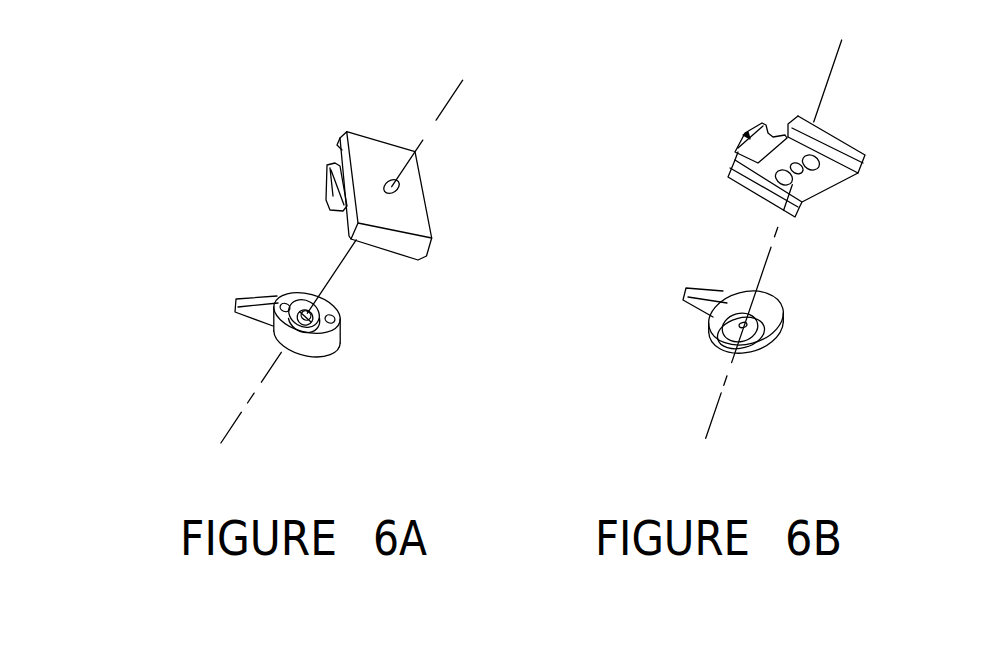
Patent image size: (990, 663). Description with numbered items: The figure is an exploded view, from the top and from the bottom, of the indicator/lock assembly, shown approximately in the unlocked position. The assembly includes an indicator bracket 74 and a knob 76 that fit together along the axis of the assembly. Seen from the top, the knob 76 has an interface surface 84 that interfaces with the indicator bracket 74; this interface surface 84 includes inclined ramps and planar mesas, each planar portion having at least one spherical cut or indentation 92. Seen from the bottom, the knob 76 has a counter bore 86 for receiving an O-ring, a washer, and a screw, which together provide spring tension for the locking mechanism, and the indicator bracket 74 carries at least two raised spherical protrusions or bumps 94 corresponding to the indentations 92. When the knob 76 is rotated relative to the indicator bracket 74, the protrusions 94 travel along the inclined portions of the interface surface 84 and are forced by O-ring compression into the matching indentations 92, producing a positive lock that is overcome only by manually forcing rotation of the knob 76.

In FIG. 6A, the indicator bracket 74 is at (385, 137).
In FIG. 6A, the knob 76 is at (235, 295).
In FIG. 6A, the interface surface 84 is at (297, 292).
In FIG. 6A, the spherical cut or indentation 92 is at (278, 298).
In FIG. 6B, the raised spherical protrusion 94 is at (800, 188).
In FIG. 6B, the counter bore 86 is at (747, 343).